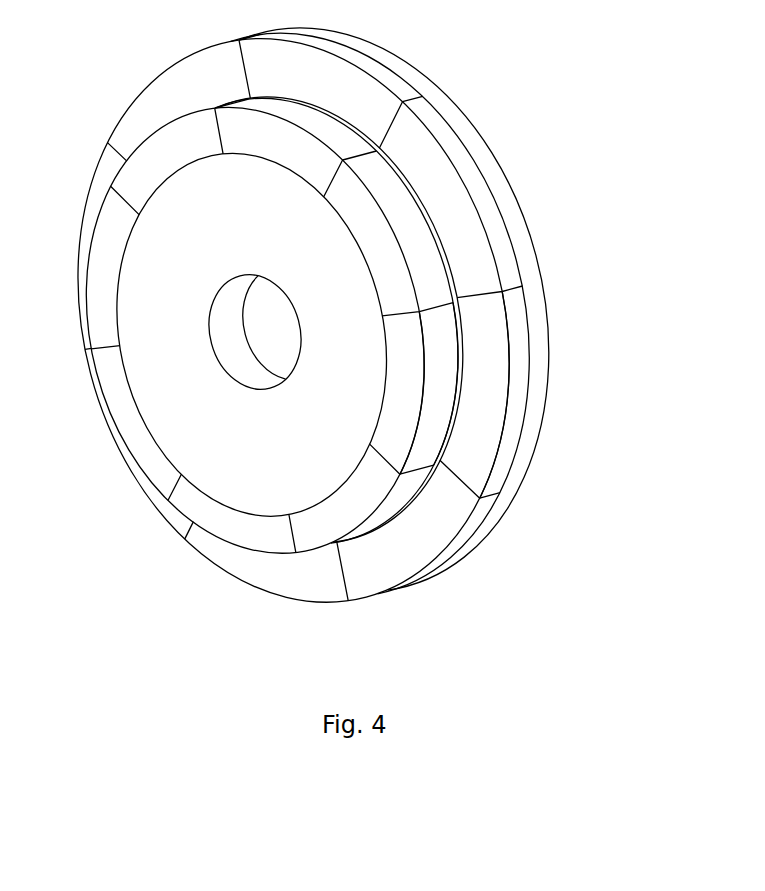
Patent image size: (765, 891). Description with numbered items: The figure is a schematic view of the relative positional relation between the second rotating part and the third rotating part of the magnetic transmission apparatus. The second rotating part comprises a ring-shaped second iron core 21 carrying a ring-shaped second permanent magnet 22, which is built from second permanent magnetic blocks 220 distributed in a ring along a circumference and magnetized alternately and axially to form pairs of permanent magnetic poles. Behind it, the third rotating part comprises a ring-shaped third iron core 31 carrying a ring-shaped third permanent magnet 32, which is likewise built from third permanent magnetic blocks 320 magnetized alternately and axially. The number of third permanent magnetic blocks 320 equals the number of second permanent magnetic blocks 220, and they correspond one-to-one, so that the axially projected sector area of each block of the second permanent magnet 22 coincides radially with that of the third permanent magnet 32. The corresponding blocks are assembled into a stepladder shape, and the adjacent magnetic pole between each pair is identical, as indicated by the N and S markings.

The second iron core 21 is at (328, 398).
The second permanent magnet 22 is at (420, 470).
The second permanent magnetic blocks 220 is at (443, 362).
The third iron core 31 is at (465, 132).
The third permanent magnet 32 is at (493, 503).
The third permanent magnetic blocks 320 is at (502, 317).